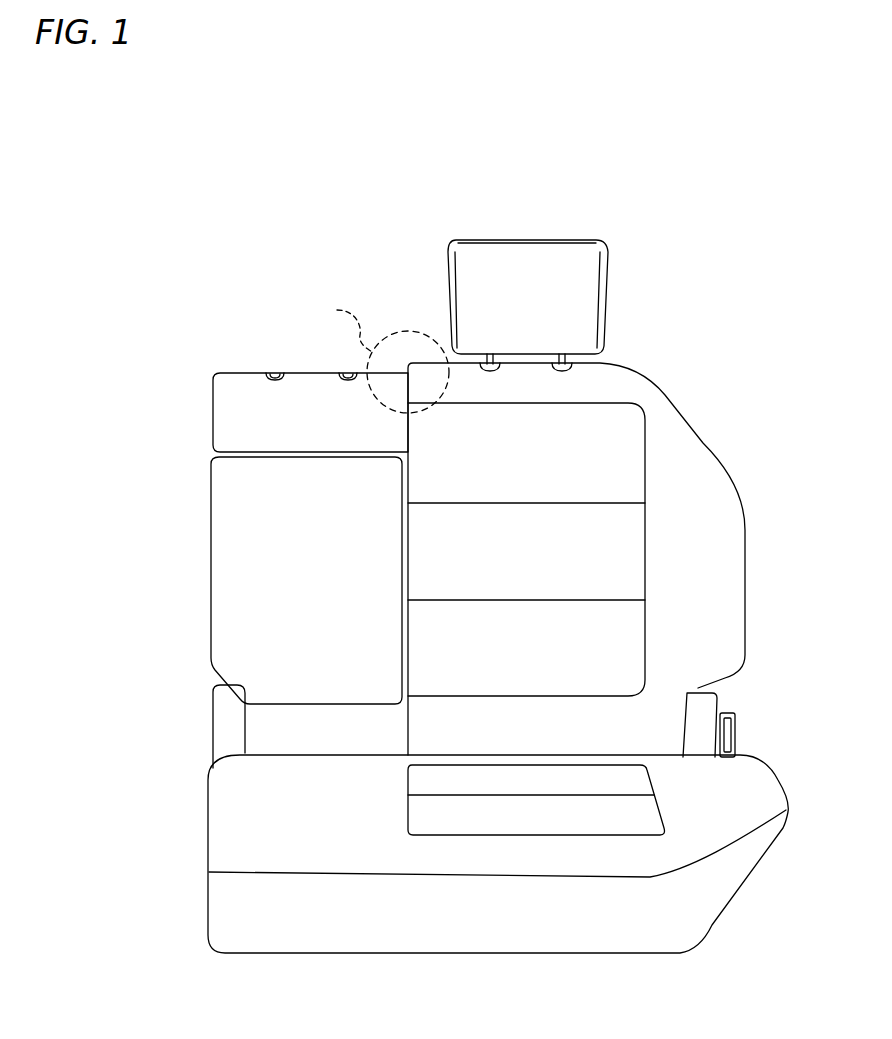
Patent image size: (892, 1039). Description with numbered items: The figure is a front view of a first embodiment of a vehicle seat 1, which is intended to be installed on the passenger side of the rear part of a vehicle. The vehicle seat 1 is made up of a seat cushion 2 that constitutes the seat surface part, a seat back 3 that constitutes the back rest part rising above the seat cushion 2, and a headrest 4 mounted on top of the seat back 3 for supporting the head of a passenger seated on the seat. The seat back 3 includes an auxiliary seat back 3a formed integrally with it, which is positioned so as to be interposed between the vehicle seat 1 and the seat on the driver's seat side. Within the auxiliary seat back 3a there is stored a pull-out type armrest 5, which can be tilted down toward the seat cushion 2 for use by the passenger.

The vehicle seat 1 is at (257, 223).
The seat cushion 2 is at (220, 815).
The seat back 3 is at (708, 449).
The auxiliary seat back 3a is at (217, 413).
The headrest 4 is at (607, 278).
The pull-out type armrest 5 is at (215, 567).